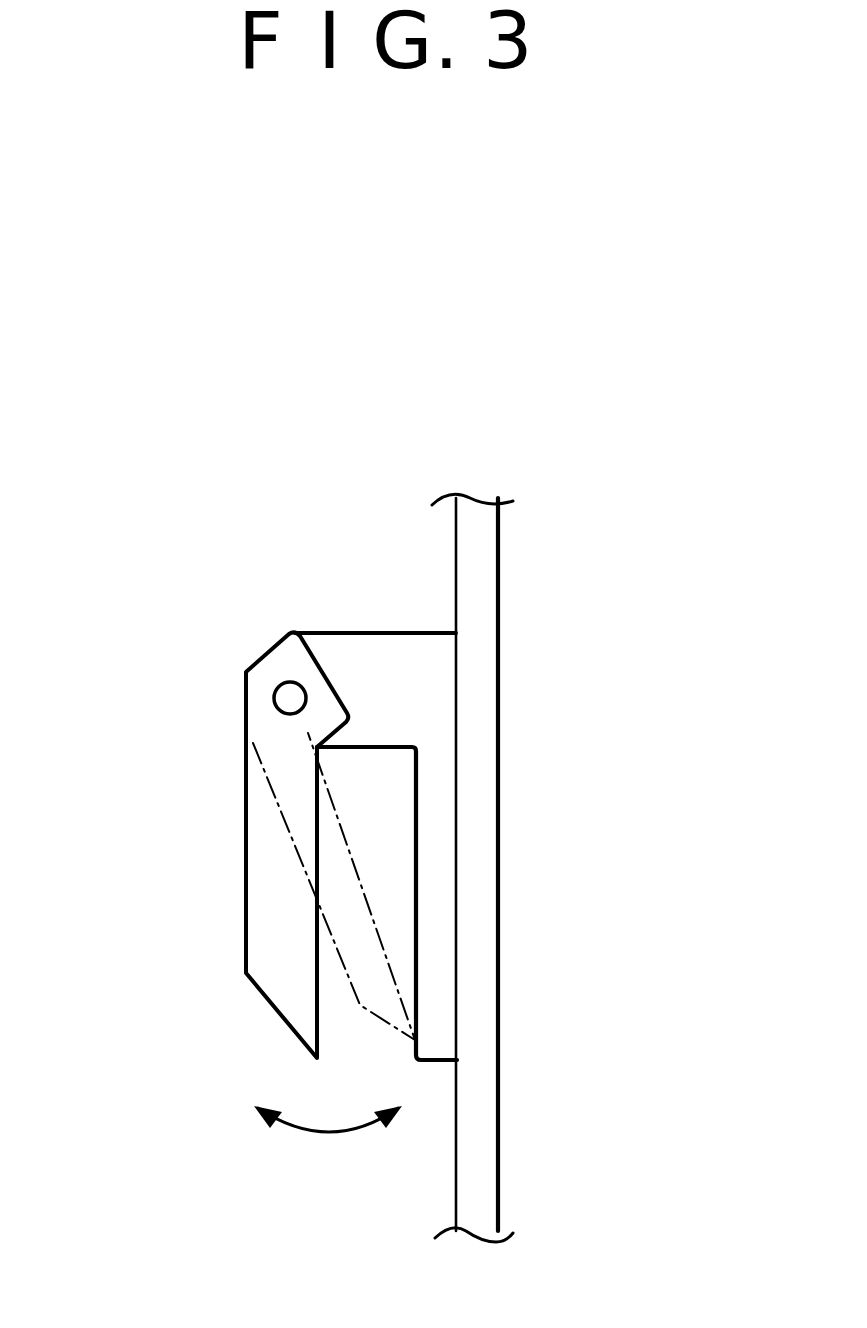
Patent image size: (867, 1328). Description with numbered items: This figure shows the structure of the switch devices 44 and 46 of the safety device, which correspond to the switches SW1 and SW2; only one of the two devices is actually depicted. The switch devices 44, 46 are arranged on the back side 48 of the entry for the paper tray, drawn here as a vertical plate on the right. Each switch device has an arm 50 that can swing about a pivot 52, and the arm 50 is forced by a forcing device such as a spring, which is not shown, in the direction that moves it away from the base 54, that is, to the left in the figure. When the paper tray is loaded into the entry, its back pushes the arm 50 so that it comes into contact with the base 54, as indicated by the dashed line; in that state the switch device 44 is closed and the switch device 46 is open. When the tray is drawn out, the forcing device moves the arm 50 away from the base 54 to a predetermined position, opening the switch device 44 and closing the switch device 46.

The switch device 44 is at (351, 711).
The switch device 46 is at (351, 711).
The back side 48 is at (465, 552).
The arm 50 is at (253, 888).
The pivot 52 is at (284, 698).
The base 54 is at (432, 705).